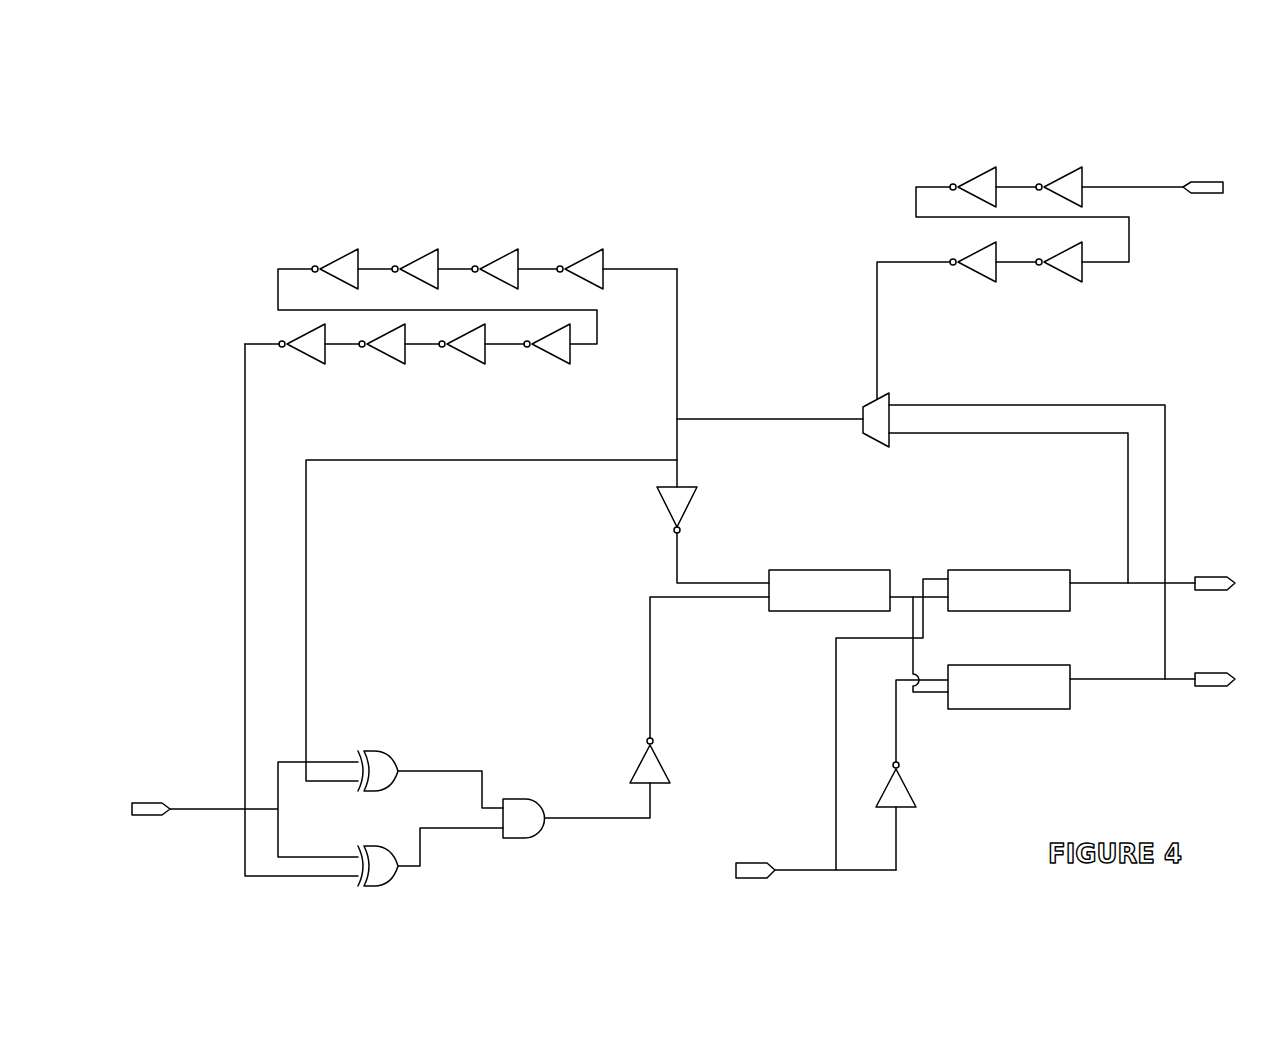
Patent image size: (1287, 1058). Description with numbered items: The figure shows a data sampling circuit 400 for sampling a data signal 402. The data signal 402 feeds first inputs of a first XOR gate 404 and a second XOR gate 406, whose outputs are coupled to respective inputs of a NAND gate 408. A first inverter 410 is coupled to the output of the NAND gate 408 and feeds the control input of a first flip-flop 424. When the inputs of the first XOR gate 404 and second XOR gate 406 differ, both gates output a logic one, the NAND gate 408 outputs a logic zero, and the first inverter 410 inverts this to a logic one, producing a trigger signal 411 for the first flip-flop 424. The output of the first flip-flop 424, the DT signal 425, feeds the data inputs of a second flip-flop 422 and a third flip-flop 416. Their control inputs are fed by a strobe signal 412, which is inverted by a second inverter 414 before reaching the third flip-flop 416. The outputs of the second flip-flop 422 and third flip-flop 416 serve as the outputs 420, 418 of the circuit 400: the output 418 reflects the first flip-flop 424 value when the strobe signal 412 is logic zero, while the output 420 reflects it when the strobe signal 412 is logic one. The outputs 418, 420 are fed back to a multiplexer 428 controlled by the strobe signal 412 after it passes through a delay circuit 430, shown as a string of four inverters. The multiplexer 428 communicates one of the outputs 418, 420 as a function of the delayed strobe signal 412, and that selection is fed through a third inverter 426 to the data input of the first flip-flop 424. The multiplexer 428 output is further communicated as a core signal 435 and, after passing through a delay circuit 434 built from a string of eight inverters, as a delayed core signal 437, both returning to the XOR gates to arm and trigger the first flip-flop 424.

The data sampling circuit 400 is at (780, 140).
The data signal 402 is at (150, 803).
The first XOR gate 404 is at (383, 752).
The second XOR gate 406 is at (383, 882).
The NAND gate 408 is at (517, 798).
The first inverter 410 is at (660, 768).
The trigger signal 411 is at (658, 667).
The strobe signal 412 is at (1208, 181).
The second inverter 414 is at (907, 787).
The third flip-flop 416 is at (1017, 709).
The output 418 is at (1215, 687).
The output 420 is at (1207, 577).
The second flip-flop 422 is at (1018, 570).
The first flip-flop 424 is at (832, 570).
The DT signal 425 is at (896, 684).
The third inverter 426 is at (697, 488).
The multiplexer 428 is at (875, 396).
The delay circuit 430 is at (1035, 133).
The delay circuit 434 is at (468, 190).
The core signal 435 is at (491, 620).
The delayed core signal 437 is at (253, 610).